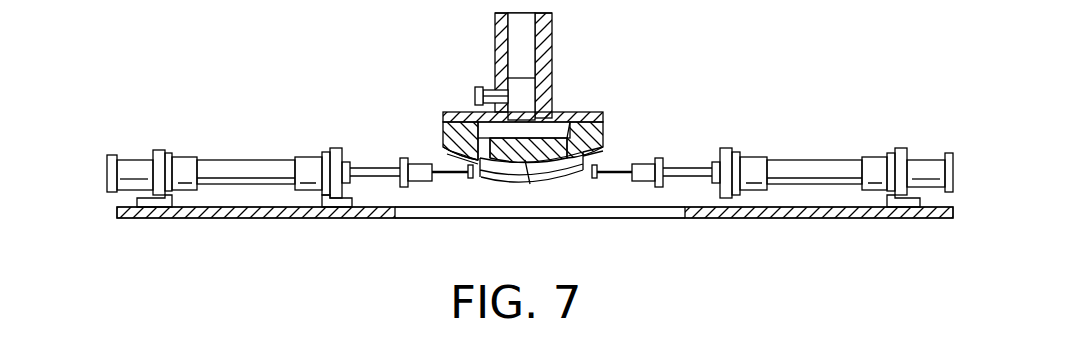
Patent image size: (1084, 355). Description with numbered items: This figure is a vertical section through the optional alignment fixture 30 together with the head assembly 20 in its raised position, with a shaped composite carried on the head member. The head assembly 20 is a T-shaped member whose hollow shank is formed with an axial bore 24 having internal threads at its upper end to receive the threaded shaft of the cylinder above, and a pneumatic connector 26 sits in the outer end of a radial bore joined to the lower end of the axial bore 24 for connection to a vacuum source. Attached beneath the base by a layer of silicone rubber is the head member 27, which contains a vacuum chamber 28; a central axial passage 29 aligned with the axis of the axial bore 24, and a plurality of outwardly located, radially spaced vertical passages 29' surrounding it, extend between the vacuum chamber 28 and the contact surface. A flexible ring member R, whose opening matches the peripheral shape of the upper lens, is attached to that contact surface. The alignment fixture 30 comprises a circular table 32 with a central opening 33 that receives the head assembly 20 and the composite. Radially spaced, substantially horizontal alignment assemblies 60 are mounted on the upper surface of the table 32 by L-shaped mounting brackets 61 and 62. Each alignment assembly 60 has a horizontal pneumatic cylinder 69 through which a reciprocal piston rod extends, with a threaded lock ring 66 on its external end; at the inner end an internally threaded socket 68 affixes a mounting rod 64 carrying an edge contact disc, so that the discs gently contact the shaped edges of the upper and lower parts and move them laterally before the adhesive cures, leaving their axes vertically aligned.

The head assembly 20 is at (480, 23).
The axial bore 24 is at (525, 35).
The pneumatic connector 26 is at (474, 98).
The head member 27 is at (600, 129).
The vacuum chamber 28 is at (566, 118).
The central axial passage 29 is at (544, 211).
The vertical passages 29' is at (465, 119).
The flexible ring member R is at (443, 150).
The alignment fixture 30 is at (176, 222).
The circular table 32 is at (857, 213).
The central opening 33 is at (415, 213).
The alignment assembly 60 is at (243, 152).
The L-shaped mounting bracket 61 is at (354, 197).
The L-shaped mounting bracket 62 is at (168, 150).
The mounting rod 64 is at (472, 180).
The threaded lock ring 66 is at (133, 160).
The internally threaded socket 68 is at (643, 160).
The horizontal pneumatic cylinder 69 is at (238, 186).